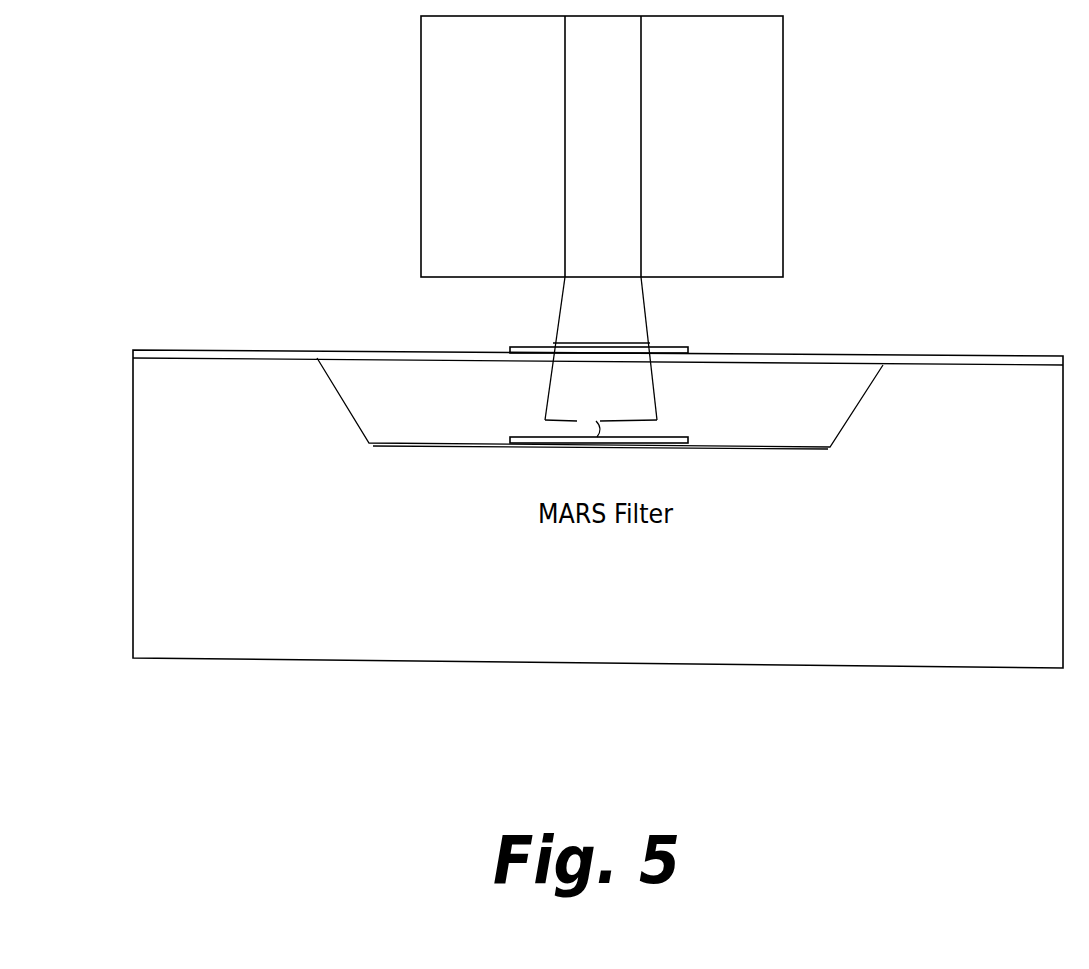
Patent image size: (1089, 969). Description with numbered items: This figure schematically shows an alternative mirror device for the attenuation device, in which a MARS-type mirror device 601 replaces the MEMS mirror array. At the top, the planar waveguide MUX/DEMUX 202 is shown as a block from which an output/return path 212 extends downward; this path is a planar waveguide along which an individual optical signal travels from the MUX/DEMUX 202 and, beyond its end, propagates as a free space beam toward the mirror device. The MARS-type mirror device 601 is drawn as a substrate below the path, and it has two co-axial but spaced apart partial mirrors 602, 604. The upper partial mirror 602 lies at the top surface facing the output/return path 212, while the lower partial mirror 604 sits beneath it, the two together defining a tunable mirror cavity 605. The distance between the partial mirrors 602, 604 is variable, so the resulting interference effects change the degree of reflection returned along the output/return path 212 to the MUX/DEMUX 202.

The planar waveguide MUX/DEMUX 202 is at (783, 140).
The output/return path 212 is at (641, 226).
The MARS-type mirror device 601 is at (315, 697).
The partial mirror 602 is at (686, 350).
The partial mirror 604 is at (678, 450).
The tunable mirror cavity 605 is at (370, 384).